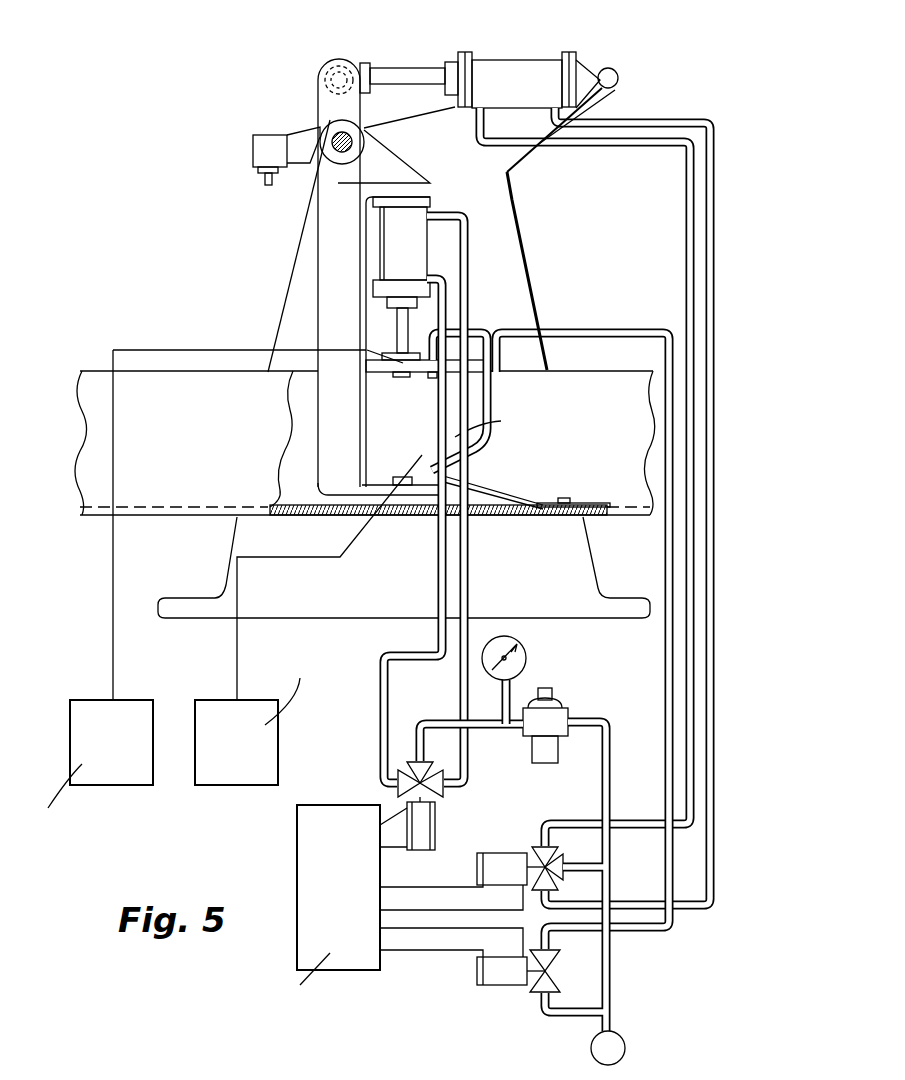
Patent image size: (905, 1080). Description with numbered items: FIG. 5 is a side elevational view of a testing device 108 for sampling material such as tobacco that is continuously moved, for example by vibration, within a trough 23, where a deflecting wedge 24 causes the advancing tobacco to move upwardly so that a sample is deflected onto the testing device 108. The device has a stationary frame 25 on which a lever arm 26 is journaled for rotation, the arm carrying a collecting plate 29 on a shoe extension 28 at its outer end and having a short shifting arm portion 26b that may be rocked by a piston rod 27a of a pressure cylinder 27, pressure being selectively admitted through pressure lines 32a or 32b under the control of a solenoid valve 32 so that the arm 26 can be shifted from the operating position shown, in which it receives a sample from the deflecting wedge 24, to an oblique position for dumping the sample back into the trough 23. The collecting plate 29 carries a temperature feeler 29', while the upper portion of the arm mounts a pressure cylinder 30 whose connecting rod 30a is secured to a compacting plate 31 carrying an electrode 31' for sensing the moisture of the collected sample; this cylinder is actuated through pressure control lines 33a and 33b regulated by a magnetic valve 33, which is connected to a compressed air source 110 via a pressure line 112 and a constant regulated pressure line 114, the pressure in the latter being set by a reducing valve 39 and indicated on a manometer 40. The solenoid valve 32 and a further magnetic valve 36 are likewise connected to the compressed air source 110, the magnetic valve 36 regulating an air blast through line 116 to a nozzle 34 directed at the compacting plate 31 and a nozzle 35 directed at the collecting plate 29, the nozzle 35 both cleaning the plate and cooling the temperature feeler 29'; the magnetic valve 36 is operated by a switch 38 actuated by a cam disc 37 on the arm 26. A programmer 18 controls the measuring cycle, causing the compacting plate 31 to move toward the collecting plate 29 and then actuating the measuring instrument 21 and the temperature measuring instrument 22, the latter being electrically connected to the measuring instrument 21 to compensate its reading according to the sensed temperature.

The programmer 18 is at (345, 918).
The measuring instrument 21 is at (115, 768).
The temperature measuring instrument 22 is at (238, 768).
The trough 23 is at (180, 495).
The deflecting wedge 24 is at (528, 497).
The frame 25 is at (513, 278).
The lever arm 26 is at (337, 295).
The shifting arm portion 26b is at (407, 176).
The pressure cylinder 27 is at (522, 90).
The piston rod 27a is at (383, 67).
The shoe extension 28 is at (325, 492).
The collecting plate 29 is at (390, 460).
The temperature feeler 29' is at (418, 516).
The pressure cylinder 30 is at (410, 263).
The connecting rod 30a is at (397, 340).
The compacting plate 31 is at (426, 381).
The electrode 31' is at (388, 393).
The solenoid valve 32 is at (520, 859).
The pressure line 32a is at (695, 650).
The pressure line 32b is at (713, 712).
The magnetic valve 33 is at (424, 806).
The pressure control line 33a is at (437, 557).
The pressure control line 33b is at (463, 540).
The nozzle 34 is at (432, 378).
The nozzle 35 is at (461, 457).
The magnetic valve 36 is at (518, 982).
The cam disc 37 is at (290, 214).
The switch 38 is at (262, 147).
The reducing valve 39 is at (560, 715).
The manometer 40 is at (518, 667).
The testing device 108 is at (518, 208).
The compressed air source 110 is at (624, 1044).
The pressure line 112 is at (612, 755).
The constant regulated pressure line 114 is at (482, 737).
The line 116 is at (665, 668).